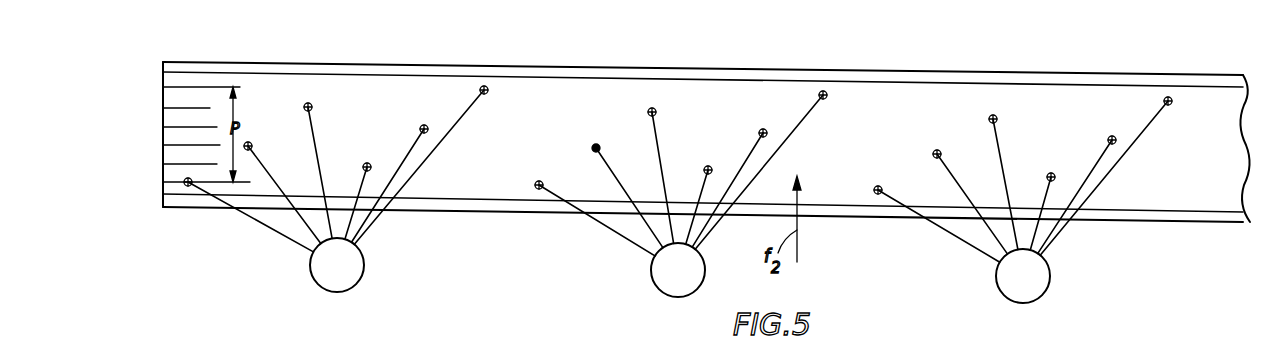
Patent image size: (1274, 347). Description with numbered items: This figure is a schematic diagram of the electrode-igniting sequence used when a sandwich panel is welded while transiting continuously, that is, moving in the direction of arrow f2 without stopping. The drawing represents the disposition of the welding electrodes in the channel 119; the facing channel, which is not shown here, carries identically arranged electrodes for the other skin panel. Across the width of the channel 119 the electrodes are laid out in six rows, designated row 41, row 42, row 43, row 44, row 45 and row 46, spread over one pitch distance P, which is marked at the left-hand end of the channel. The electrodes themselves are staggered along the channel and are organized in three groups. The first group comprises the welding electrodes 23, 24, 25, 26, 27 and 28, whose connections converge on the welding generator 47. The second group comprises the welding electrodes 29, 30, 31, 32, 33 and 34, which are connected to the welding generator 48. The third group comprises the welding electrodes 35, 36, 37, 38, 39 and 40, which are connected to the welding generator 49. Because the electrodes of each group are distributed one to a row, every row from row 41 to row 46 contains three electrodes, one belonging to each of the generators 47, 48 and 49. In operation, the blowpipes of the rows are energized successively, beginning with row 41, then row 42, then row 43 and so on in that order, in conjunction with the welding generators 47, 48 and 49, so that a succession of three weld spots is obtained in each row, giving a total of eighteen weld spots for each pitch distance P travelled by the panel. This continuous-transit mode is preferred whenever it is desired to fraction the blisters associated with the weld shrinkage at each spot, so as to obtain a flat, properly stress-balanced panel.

The channel 119 is at (705, 57).
The row 41 is at (191, 179).
The row 42 is at (174, 161).
The row 43 is at (176, 142).
The row 44 is at (174, 124).
The row 45 is at (171, 105).
The row 46 is at (186, 84).
The welding electrode 23 is at (188, 182).
The welding electrode 24 is at (388, 155).
The welding electrode 25 is at (248, 146).
The welding electrode 26 is at (424, 129).
The welding electrode 27 is at (308, 107).
The welding electrode 28 is at (484, 90).
The welding electrode 29 is at (539, 185).
The welding electrode 30 is at (730, 155).
The welding electrode 31 is at (612, 130).
The welding electrode 32 is at (790, 116).
The welding electrode 33 is at (652, 112).
The welding electrode 34 is at (823, 95).
The welding electrode 35 is at (899, 172).
The welding electrode 36 is at (1076, 162).
The welding electrode 37 is at (955, 134).
The welding electrode 38 is at (1120, 116).
The welding electrode 39 is at (993, 119).
The welding electrode 40 is at (1168, 101).
The welding generator 47 is at (337, 265).
The welding generator 48 is at (678, 270).
The welding generator 49 is at (1023, 276).